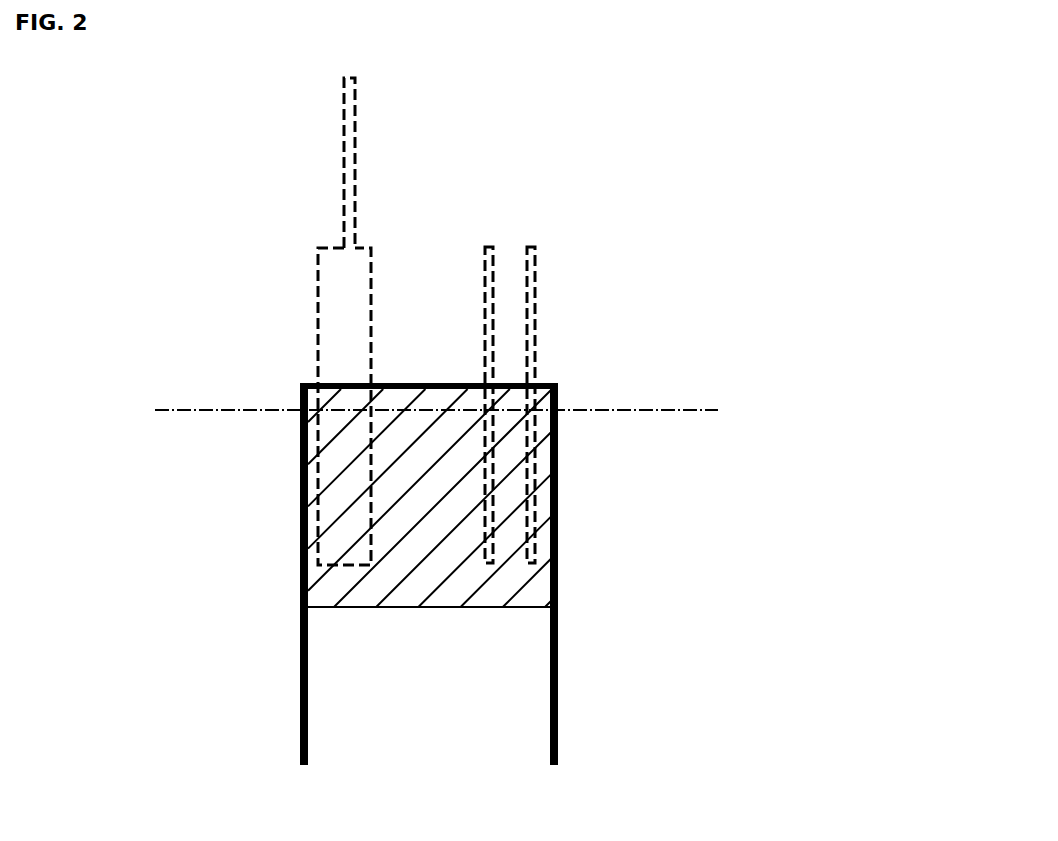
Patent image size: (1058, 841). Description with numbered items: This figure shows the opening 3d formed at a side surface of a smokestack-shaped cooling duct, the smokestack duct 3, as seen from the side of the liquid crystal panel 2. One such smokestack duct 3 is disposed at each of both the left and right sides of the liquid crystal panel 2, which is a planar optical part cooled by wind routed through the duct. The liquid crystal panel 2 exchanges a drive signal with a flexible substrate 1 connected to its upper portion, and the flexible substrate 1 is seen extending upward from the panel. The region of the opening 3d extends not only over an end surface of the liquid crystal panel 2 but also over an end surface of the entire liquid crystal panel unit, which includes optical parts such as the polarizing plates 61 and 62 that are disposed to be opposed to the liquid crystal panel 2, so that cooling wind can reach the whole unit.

The flexible substrate 1 is at (360, 148).
The liquid crystal panel 2 is at (318, 280).
The smokestack duct 3 is at (310, 663).
The opening 3d is at (310, 588).
The polarizing plate 61 is at (488, 247).
The polarizing plate 62 is at (537, 278).